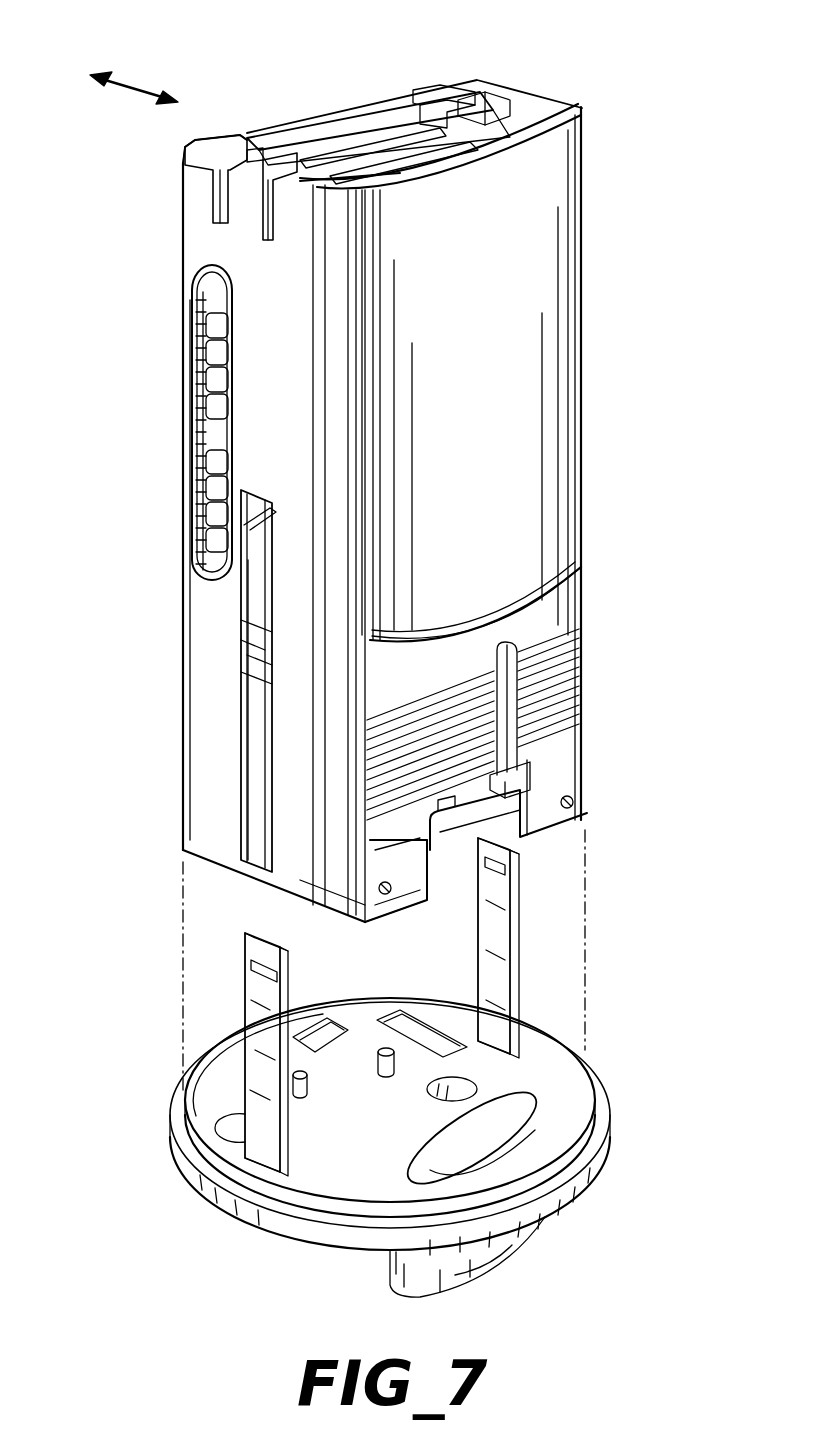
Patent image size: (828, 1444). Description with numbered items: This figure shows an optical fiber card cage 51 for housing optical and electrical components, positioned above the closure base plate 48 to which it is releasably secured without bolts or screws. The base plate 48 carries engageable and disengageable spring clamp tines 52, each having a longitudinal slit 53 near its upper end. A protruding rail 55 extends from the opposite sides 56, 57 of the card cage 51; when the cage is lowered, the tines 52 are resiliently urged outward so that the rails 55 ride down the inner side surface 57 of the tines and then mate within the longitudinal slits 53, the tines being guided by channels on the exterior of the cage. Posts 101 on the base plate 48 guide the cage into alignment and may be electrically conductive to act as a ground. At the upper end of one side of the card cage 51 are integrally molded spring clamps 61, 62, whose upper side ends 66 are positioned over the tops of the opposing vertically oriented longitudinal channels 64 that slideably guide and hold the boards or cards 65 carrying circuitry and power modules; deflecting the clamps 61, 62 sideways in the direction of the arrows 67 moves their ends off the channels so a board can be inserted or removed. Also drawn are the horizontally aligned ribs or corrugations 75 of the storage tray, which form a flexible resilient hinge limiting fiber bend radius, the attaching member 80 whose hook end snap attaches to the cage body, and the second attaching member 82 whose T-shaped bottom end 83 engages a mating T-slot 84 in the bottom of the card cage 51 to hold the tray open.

The closure base plate 48 is at (355, 1237).
The card cage 51 is at (585, 385).
The spring clamp tines 52 is at (265, 1140).
The longitudinal slit 53 is at (245, 968).
The protruding rail 55 is at (242, 652).
The side of the card cage 56 is at (265, 447).
The side of the card cage 57 is at (585, 222).
The spring clamp 61 is at (190, 165).
The spring clamp 62 is at (273, 180).
The longitudinal channels 64 is at (460, 88).
The boards or cards 65 is at (370, 110).
The upper side ends of the spring clamps 66 is at (255, 145).
The arrows 67 is at (138, 85).
The ribs or corrugations 75 is at (565, 675).
The attaching member 80 is at (582, 106).
The second attaching member 82 is at (582, 590).
The bottom end 83 is at (522, 772).
The T-slot 84 is at (430, 845).
The posts 101 is at (300, 1085).